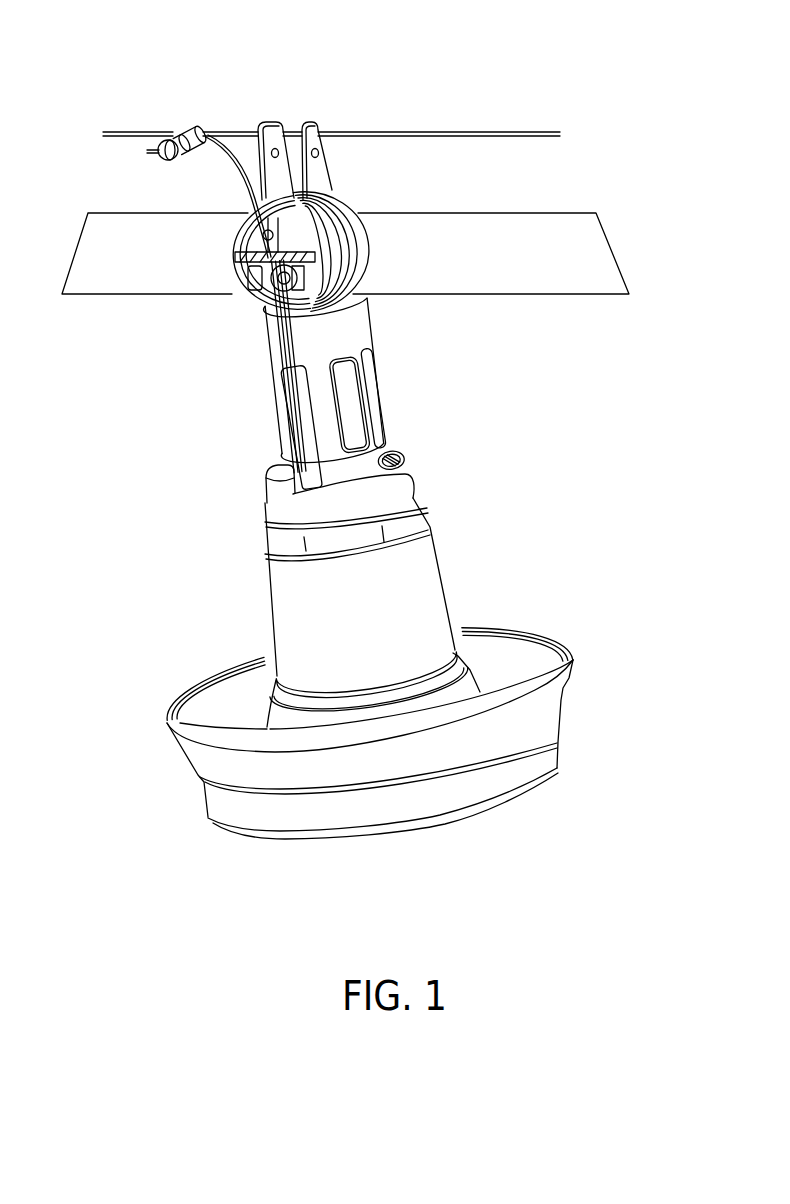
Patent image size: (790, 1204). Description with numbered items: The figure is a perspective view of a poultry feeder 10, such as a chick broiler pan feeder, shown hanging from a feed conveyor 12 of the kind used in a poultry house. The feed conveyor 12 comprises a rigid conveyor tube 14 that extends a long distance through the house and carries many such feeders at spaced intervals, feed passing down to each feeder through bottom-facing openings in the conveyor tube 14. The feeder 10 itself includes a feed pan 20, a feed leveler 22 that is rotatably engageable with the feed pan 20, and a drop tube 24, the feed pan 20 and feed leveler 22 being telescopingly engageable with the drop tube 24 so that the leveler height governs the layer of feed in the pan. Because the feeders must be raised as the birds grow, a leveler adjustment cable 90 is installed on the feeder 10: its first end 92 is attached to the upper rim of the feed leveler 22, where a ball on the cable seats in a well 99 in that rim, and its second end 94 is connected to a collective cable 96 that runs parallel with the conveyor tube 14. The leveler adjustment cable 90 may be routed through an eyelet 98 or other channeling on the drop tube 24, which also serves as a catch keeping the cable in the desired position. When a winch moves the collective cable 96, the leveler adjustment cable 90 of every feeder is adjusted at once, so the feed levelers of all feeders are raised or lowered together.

The poultry feeder 10 is at (602, 558).
The feed conveyor 12 is at (649, 166).
The conveyor tube 14 is at (524, 213).
The feed pan 20 is at (560, 737).
The feed leveler 22 is at (437, 548).
The drop tube 24 is at (373, 354).
The leveler adjustment cable 90 is at (226, 182).
The first end 92 is at (290, 456).
The second end 94 is at (147, 151).
The collective cable 96 is at (467, 126).
The eyelet 98 is at (247, 284).
The well 99 is at (270, 495).